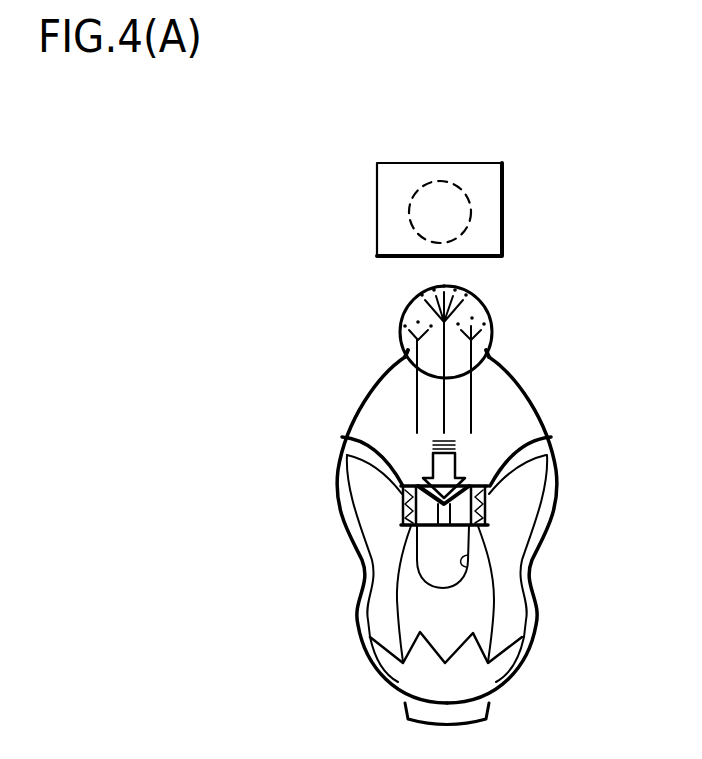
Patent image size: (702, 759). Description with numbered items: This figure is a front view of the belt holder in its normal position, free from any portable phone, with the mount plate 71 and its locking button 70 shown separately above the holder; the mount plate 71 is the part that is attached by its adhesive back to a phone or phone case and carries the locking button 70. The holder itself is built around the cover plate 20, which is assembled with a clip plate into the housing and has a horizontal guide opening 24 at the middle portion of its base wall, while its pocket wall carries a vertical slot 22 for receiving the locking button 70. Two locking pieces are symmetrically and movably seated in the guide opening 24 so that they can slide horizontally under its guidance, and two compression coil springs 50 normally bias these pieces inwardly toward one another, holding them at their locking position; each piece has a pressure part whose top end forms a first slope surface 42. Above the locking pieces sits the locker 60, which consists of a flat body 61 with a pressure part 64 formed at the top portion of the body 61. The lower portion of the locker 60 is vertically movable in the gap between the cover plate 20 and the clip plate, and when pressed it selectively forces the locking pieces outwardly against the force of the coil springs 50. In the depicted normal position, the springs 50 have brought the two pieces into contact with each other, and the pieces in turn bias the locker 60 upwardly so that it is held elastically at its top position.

The mount plate 71 is at (503, 183).
The locking button 70 is at (472, 215).
The locker 60 is at (400, 318).
The pressure part 64 is at (489, 318).
The flat body 61 is at (490, 358).
The cover plate 20 is at (318, 442).
The first slope surface 42 is at (412, 486).
The compression coil springs 50 is at (406, 505).
The guide opening 24 is at (486, 498).
The vertical slot 22 is at (466, 570).